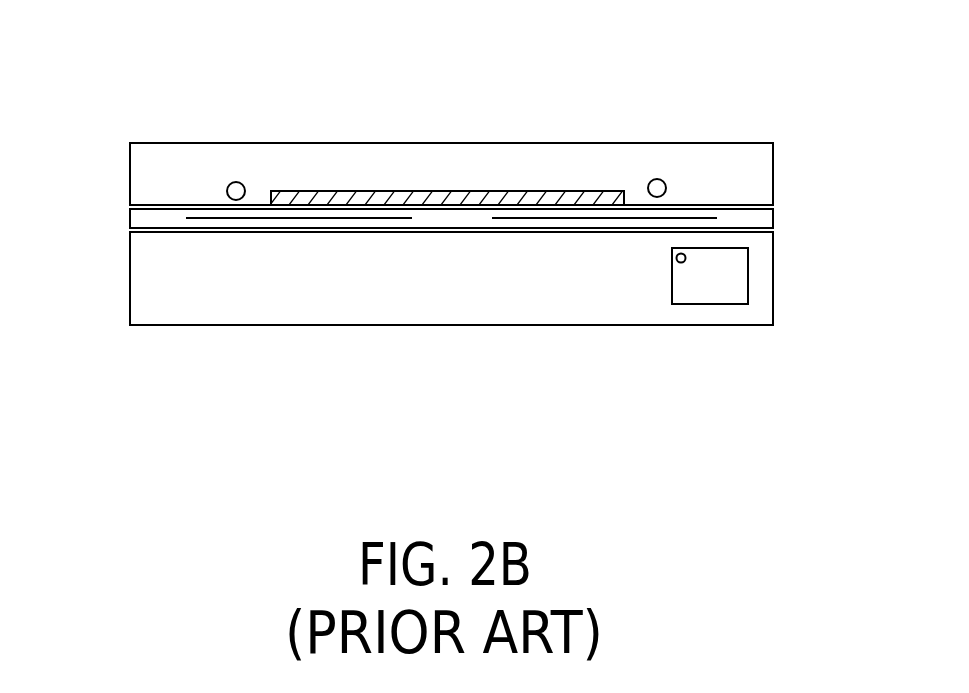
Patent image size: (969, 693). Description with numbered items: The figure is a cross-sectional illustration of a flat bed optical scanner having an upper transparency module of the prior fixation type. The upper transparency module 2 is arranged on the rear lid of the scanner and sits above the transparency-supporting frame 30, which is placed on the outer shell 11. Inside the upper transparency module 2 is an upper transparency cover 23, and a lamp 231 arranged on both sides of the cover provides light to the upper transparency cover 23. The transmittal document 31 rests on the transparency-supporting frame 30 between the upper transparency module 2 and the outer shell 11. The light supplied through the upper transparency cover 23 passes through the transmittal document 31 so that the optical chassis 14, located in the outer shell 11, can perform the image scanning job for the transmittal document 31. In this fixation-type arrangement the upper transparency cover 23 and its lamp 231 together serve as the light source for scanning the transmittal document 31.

The upper transparency module 2 is at (323, 113).
The upper transparency cover 23 is at (433, 191).
The lamp 231 is at (235, 182).
The transparency-supporting frame 30 is at (137, 218).
The transmittal document 31 is at (292, 218).
The outer shell 11 is at (131, 285).
The optical chassis 14 is at (745, 272).